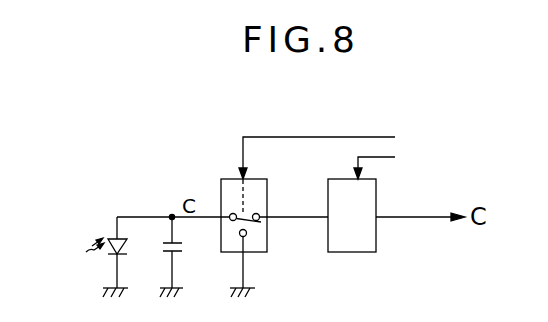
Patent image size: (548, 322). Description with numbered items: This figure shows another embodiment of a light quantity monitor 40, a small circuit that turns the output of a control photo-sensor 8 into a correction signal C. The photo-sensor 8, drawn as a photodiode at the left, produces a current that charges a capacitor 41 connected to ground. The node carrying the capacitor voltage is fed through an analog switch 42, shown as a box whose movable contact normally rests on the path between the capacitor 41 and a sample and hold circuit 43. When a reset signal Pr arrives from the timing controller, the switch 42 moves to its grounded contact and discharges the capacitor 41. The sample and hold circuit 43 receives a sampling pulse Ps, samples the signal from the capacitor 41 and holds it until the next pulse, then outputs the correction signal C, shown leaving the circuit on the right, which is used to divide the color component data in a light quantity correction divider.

The control photo-sensor 8 is at (103, 238).
The light quantity monitor 40 is at (223, 160).
The capacitor 41 is at (183, 246).
The analog switch 42 is at (268, 247).
The sample and hold circuit 43 is at (376, 245).